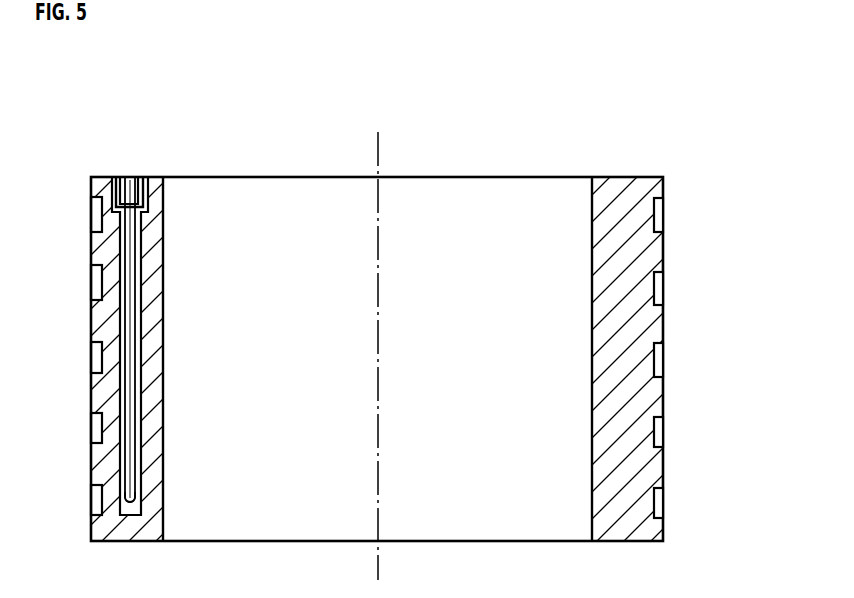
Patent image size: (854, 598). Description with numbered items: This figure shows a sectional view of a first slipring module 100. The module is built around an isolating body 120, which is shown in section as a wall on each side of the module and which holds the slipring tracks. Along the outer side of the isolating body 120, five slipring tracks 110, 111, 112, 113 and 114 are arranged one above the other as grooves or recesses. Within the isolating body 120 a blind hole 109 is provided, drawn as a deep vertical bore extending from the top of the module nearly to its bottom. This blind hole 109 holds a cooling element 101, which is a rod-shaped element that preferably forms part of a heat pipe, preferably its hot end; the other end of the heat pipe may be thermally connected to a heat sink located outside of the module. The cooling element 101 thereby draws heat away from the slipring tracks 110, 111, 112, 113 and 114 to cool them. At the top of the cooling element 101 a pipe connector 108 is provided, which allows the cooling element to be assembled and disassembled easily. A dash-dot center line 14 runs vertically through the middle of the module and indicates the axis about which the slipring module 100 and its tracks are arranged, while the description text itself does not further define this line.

The first slipring module 100 is at (490, 149).
The longitudinal axis 14 is at (378, 262).
The pipe connector 108 is at (130, 177).
The cooling element 101 is at (130, 375).
The blind hole 109 is at (128, 505).
The sliding track 110 is at (660, 213).
The slipring track 111 is at (660, 287).
The slipring track 112 is at (660, 358).
The slipring track 113 is at (660, 432).
The slipring track 114 is at (660, 503).
The isolating body 120 is at (618, 440).